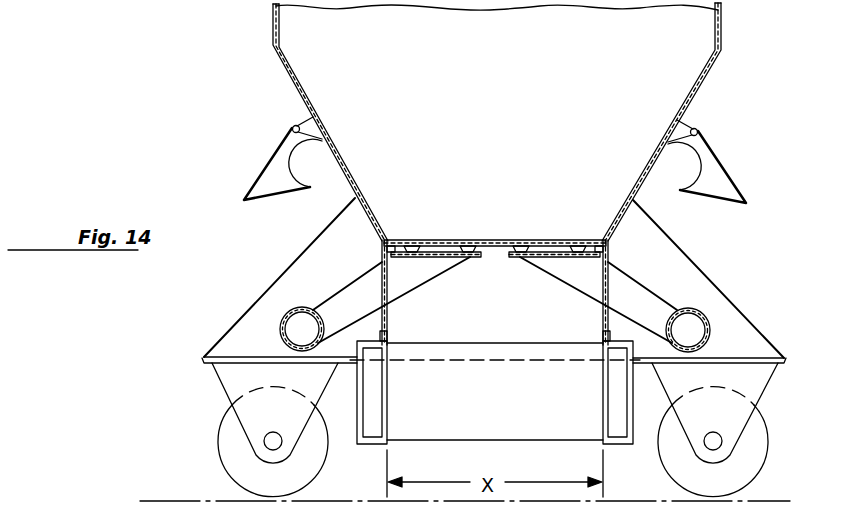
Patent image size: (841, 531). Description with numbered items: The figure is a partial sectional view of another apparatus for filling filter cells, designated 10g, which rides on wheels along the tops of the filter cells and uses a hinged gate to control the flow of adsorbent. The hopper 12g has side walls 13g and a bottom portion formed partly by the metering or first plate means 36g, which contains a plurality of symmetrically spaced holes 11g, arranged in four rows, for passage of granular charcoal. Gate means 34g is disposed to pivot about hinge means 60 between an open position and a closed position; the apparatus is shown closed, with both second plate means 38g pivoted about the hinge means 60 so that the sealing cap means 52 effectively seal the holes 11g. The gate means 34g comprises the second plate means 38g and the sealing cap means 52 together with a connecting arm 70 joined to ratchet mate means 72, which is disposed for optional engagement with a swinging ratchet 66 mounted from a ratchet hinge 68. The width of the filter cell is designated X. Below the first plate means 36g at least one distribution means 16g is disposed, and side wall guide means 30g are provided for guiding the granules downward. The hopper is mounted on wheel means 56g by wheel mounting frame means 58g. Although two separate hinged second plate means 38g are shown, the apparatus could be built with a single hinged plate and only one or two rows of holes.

The apparatus for filling filter cells 10g is at (712, 72).
The side walls 13g is at (274, 34).
The hopper 12g is at (497, 83).
The ratchet hinge 68 is at (318, 132).
The swinging ratchet 66 is at (267, 173).
The first plate means 36g is at (493, 240).
The hinge means 60 is at (395, 240).
The holes 11g is at (404, 244).
The second plate means 38g is at (434, 258).
The sealing cap means 52 is at (503, 256).
The gate means 34g is at (383, 253).
The connecting arm 70 is at (639, 282).
The wheel mounting frame means 58g is at (228, 344).
The ratchet mate means 72 is at (294, 313).
The wheel means 56g is at (228, 445).
The side wall guide means 30g is at (387, 398).
The distribution means 16g is at (488, 348).